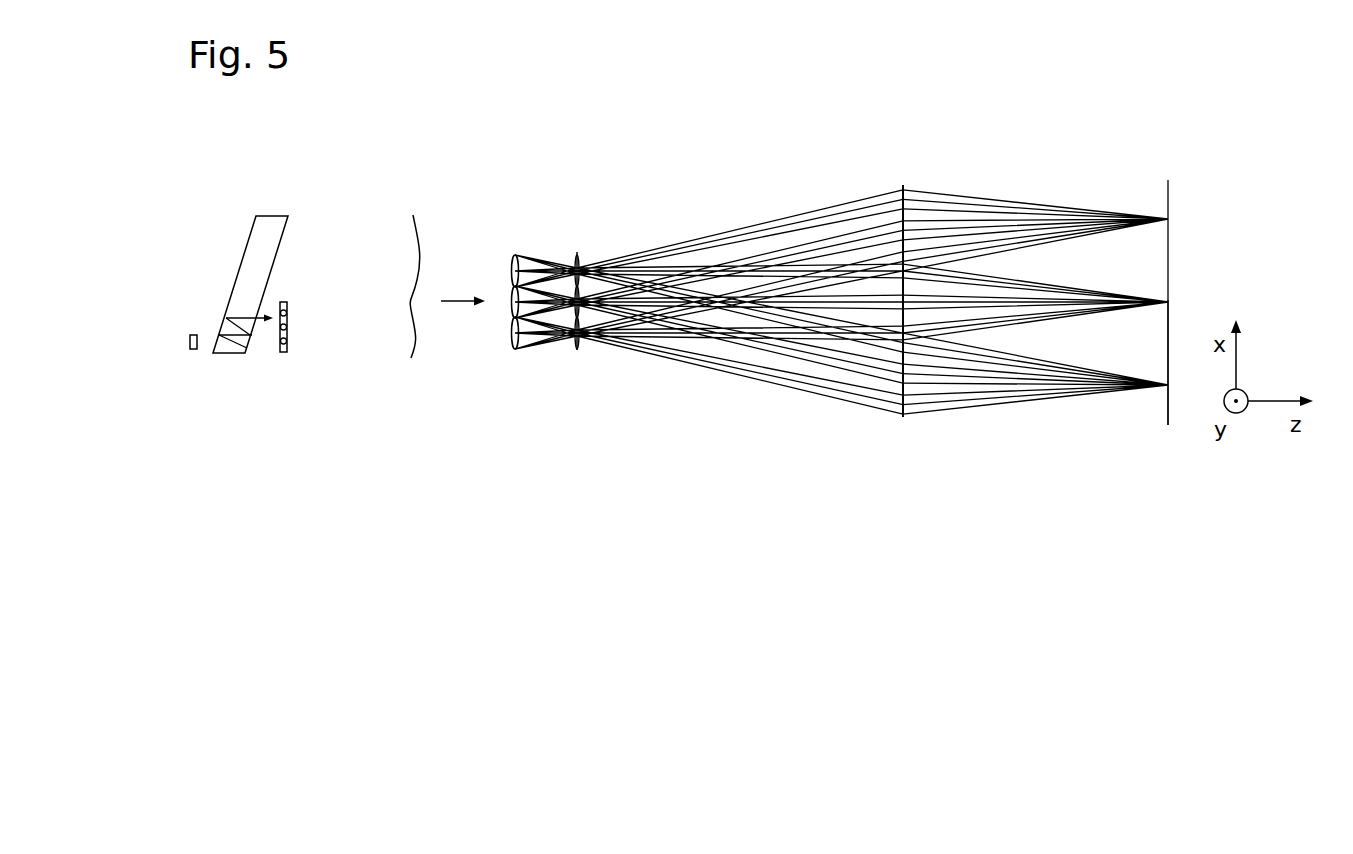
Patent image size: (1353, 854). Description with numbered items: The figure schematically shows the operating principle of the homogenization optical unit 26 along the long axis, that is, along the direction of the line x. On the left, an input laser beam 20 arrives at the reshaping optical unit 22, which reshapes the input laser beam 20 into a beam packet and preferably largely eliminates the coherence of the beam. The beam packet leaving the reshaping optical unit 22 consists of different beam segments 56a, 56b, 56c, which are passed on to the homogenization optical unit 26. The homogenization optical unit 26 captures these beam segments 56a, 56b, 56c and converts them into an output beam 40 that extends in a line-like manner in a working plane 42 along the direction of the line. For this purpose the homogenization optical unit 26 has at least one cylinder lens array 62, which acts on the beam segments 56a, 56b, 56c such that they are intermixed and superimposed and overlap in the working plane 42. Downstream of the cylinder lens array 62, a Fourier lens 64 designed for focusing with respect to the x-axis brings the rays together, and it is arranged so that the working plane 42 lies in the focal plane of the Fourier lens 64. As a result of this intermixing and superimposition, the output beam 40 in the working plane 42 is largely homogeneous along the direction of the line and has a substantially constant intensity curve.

The input laser beam 20 is at (188, 356).
The reshaping optical unit 22 is at (279, 205).
The homogenization optical unit 26 is at (549, 273).
The output beam 40 is at (1171, 165).
The working plane 42 is at (1169, 410).
The beam segment 56a is at (287, 342).
The beam segment 56b is at (287, 327).
The beam segment 56c is at (287, 307).
The cylinder lens array 62 is at (515, 350).
The Fourier lens 64 is at (903, 417).